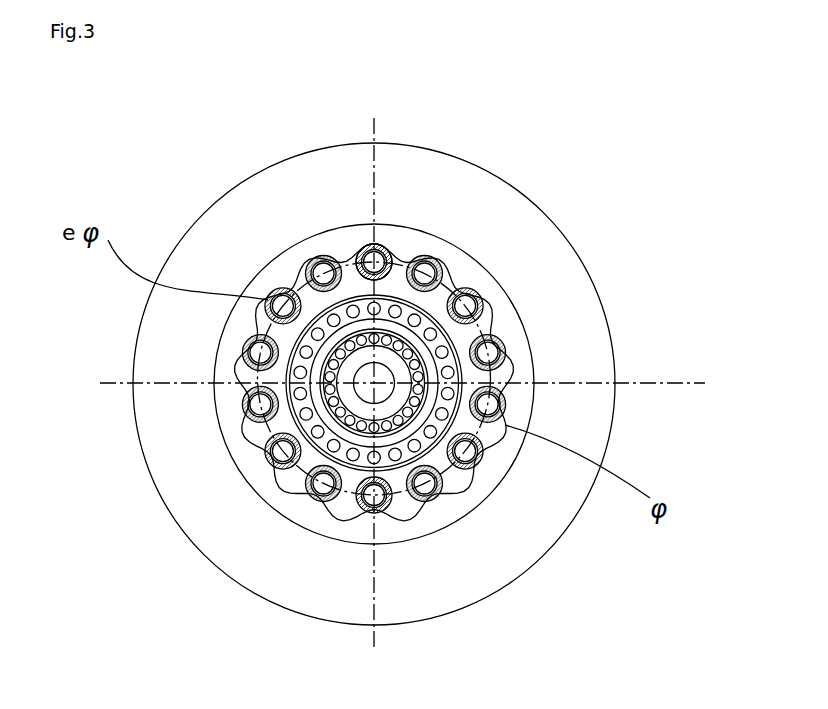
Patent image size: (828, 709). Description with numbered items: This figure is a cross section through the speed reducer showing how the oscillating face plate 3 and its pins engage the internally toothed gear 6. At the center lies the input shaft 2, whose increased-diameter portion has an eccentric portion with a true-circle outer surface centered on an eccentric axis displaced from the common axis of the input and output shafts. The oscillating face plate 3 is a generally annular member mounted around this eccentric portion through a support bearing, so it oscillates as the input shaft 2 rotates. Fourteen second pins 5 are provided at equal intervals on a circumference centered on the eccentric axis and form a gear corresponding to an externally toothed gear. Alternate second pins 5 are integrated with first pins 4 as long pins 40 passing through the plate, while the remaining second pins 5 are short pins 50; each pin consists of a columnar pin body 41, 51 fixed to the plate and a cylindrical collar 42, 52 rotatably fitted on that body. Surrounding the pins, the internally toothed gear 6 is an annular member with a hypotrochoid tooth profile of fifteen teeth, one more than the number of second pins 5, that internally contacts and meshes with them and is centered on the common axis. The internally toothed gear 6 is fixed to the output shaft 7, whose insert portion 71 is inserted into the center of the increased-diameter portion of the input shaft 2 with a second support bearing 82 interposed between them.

The input shaft 2 is at (322, 311).
The oscillating face plate 3 is at (292, 470).
The first pins 4 is at (358, 253).
The long pins 40 is at (374, 303).
The pin body 41 is at (374, 303).
The collar 42 is at (383, 245).
The second pins 5 is at (420, 280).
The short pins 50 is at (482, 287).
The pin body 51 is at (482, 287).
The collar 52 is at (443, 276).
The internally toothed gear 6 is at (432, 512).
The output shaft 7 is at (262, 450).
The insert portion 71 is at (347, 384).
The second support bearing 82 is at (252, 334).